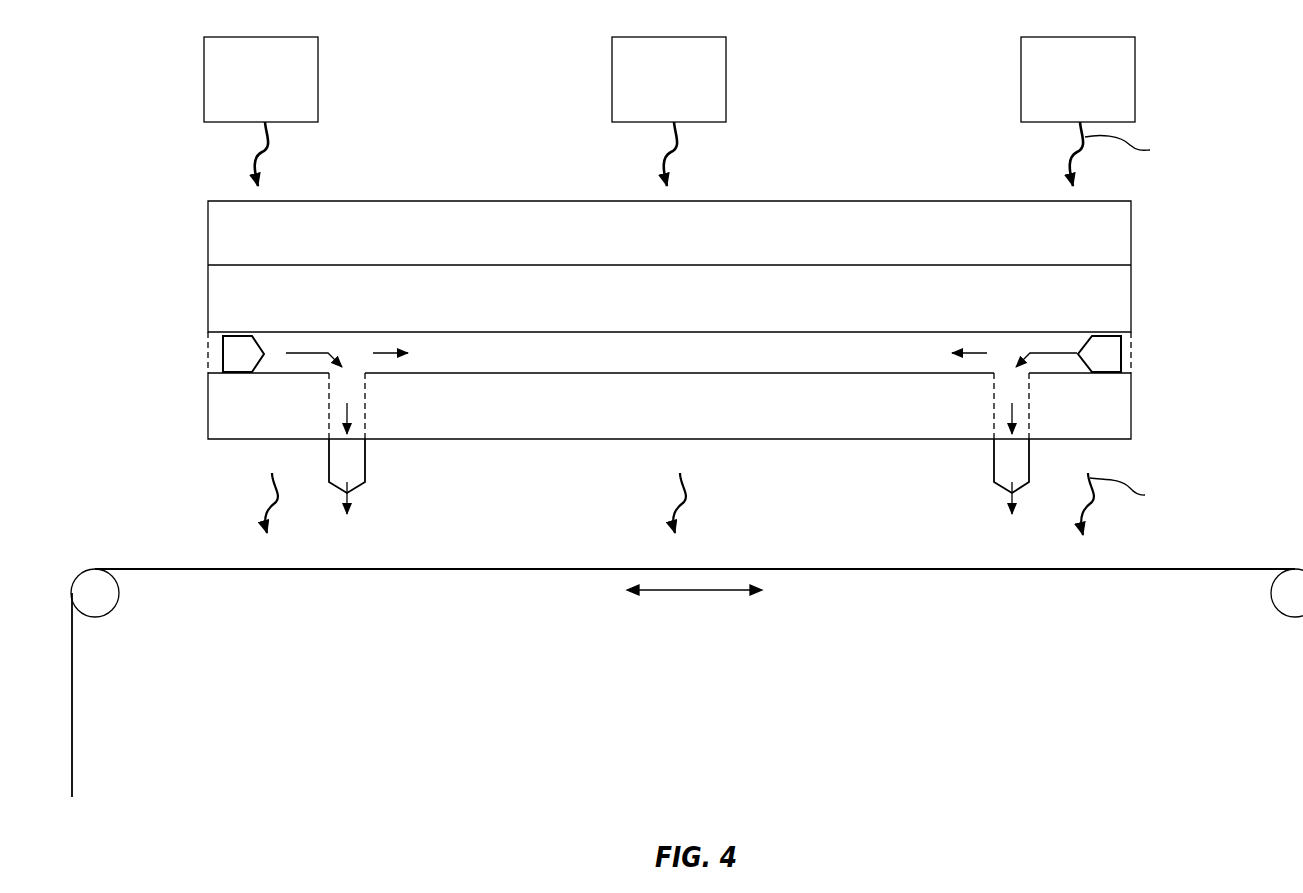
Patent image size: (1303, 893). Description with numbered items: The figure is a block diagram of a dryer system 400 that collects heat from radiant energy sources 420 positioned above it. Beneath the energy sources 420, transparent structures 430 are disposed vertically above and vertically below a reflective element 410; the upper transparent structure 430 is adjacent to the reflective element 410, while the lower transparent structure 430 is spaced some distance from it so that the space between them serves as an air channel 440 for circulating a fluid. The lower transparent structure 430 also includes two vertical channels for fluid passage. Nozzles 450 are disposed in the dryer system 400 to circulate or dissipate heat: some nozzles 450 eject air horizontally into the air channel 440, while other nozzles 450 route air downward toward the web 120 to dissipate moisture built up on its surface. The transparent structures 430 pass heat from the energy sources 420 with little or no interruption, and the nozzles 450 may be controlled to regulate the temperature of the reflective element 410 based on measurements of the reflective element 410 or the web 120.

The dryer system 400 is at (84, 80).
The radiant energy sources 420 is at (279, 88).
The transparent structures 430 is at (688, 428).
The reflective element 410 is at (688, 321).
The air channel 440 is at (772, 364).
The nozzles 450 is at (1172, 340).
The web 120 is at (72, 712).